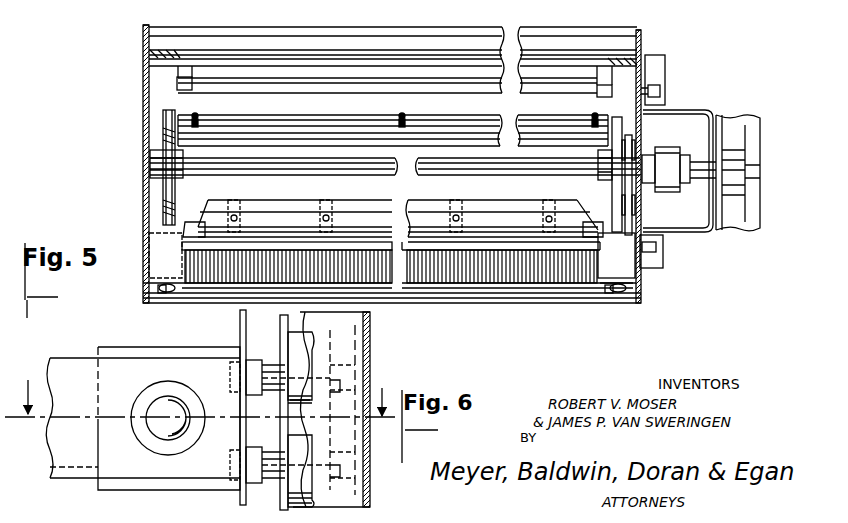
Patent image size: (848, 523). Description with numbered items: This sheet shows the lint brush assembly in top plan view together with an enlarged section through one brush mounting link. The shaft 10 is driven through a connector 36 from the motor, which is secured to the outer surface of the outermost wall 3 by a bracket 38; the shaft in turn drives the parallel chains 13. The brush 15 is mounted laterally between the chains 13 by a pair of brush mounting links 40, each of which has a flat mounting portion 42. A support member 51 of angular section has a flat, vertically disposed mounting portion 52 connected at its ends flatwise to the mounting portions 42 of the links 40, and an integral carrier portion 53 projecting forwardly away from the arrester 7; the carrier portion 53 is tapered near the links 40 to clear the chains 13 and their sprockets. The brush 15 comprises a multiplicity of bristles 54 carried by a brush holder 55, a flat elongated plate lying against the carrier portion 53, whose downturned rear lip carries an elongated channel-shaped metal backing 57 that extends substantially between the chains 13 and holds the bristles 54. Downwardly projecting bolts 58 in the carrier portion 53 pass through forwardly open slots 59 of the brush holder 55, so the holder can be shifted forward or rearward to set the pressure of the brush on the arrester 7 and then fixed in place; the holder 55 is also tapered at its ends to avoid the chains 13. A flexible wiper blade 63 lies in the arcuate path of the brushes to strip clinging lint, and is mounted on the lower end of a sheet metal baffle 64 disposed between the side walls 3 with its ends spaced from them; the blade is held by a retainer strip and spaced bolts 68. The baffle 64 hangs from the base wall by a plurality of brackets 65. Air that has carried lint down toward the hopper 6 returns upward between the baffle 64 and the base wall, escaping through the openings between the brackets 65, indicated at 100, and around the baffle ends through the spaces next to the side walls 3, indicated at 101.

In FIG. 5, the side wall 3 is at (143, 135).
In FIG. 5, the hopper 6 is at (643, 226).
In FIG. 6, the arrester 7 is at (205, 358).
In FIG. 5, the shaft 10 is at (415, 175).
In FIG. 5, the chain 13 is at (165, 196).
In FIG. 5, the brush 15 is at (523, 285).
In FIG. 5, the connector 36 is at (669, 146).
In FIG. 5, the bracket 38 is at (693, 112).
In FIG. 5, the brush mounting link 40 is at (161, 234).
In FIG. 6, the brush mounting link 40 is at (240, 347).
In FIG. 5, the mounting portion 42 is at (202, 232).
In FIG. 5, the support member 51 is at (283, 206).
In FIG. 5, the mounting portion 52 is at (482, 237).
In FIG. 5, the carrier portion 53 is at (517, 207).
In FIG. 5, the bristles 54 is at (468, 268).
In FIG. 5, the brush holder 55 is at (427, 208).
In FIG. 5, the metal backing 57 is at (513, 249).
In FIG. 5, the bolt 58 is at (233, 212).
In FIG. 5, the slot 59 is at (325, 210).
In FIG. 5, the wiper blade 63 is at (452, 138).
In FIG. 5, the baffle 64 is at (287, 97).
In FIG. 5, the bracket 65 is at (400, 85).
In FIG. 5, the bolt 68 is at (198, 116).
In FIG. 5, the opening between brackets 100 is at (444, 85).
In FIG. 5, the space around baffle ends 101 is at (158, 93).